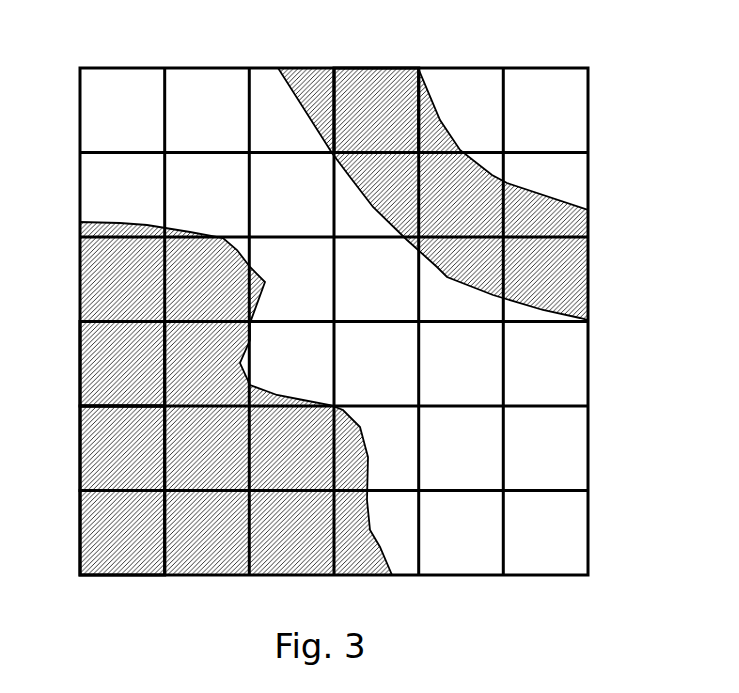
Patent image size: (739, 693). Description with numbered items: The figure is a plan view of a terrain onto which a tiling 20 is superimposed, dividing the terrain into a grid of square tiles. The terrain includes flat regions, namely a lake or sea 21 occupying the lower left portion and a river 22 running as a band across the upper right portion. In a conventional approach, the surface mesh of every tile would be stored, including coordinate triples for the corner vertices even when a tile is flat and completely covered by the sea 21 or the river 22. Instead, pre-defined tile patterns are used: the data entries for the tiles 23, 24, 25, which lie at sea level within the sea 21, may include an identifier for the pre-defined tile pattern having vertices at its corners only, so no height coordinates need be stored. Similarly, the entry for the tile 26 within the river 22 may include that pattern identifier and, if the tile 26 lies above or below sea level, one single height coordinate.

The tiling 20 is at (592, 118).
The lake or sea 21 is at (98, 220).
The river 22 is at (435, 113).
The tile 23 is at (95, 547).
The tile 24 is at (90, 462).
The tile 25 is at (88, 380).
The tile 26 is at (379, 109).